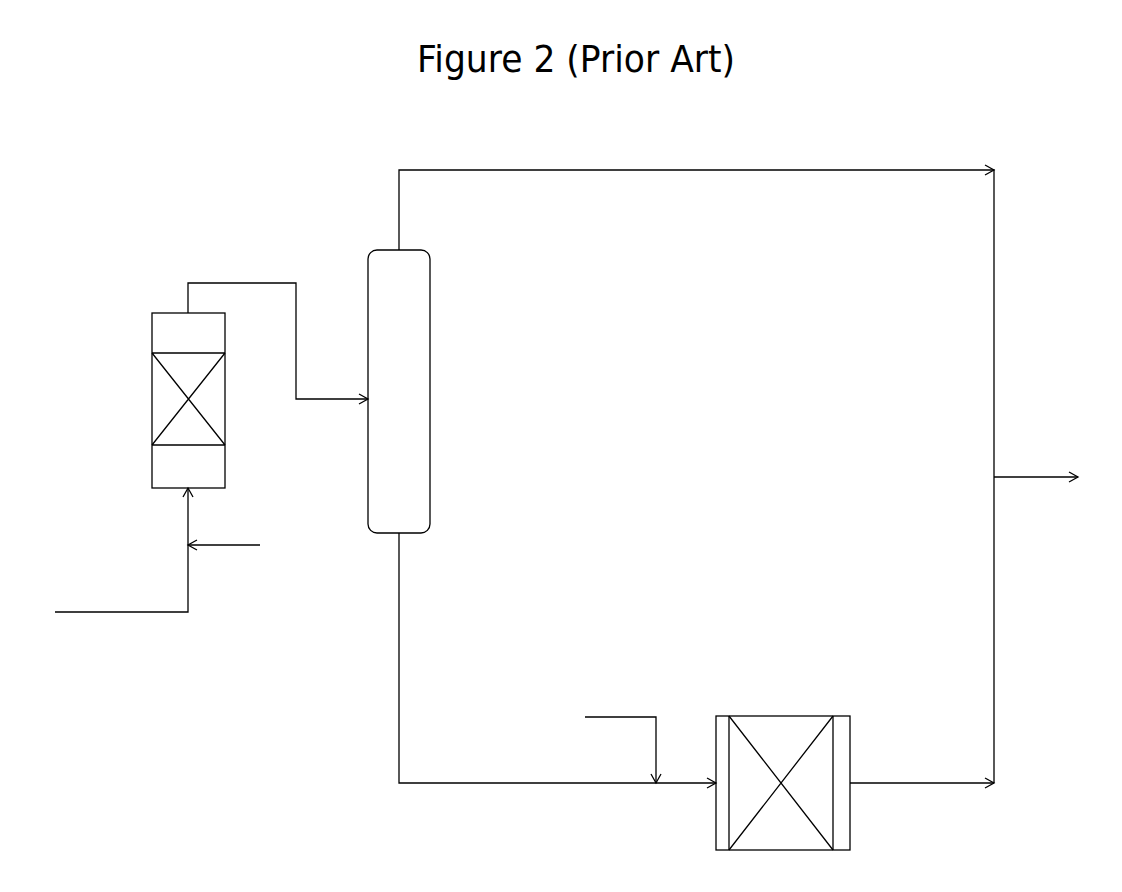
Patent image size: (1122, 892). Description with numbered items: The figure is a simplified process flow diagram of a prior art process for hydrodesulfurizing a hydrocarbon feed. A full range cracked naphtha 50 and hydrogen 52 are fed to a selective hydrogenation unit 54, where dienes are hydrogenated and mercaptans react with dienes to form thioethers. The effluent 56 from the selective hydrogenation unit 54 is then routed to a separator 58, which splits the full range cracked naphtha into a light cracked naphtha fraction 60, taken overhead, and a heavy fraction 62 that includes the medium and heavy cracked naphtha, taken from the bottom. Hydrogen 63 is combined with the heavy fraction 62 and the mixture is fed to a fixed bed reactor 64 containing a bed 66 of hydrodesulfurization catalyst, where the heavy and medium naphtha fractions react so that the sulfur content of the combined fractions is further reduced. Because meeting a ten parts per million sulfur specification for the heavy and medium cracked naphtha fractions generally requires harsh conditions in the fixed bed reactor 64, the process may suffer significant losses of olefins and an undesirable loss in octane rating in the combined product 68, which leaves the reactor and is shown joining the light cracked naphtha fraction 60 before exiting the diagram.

The full range cracked naphtha 50 is at (98, 613).
The hydrogen 52 is at (250, 542).
The selective hydrogenation unit 54 is at (155, 310).
The effluent 56 is at (220, 280).
The separator 58 is at (371, 250).
The light cracked naphtha fraction 60 is at (503, 169).
The heavy fraction 62 is at (497, 779).
The hydrogen 63 is at (607, 717).
The fixed bed reactor 64 is at (717, 710).
The bed of hydrodesulfurization catalyst 66 is at (784, 740).
The combined product 68 is at (1047, 474).